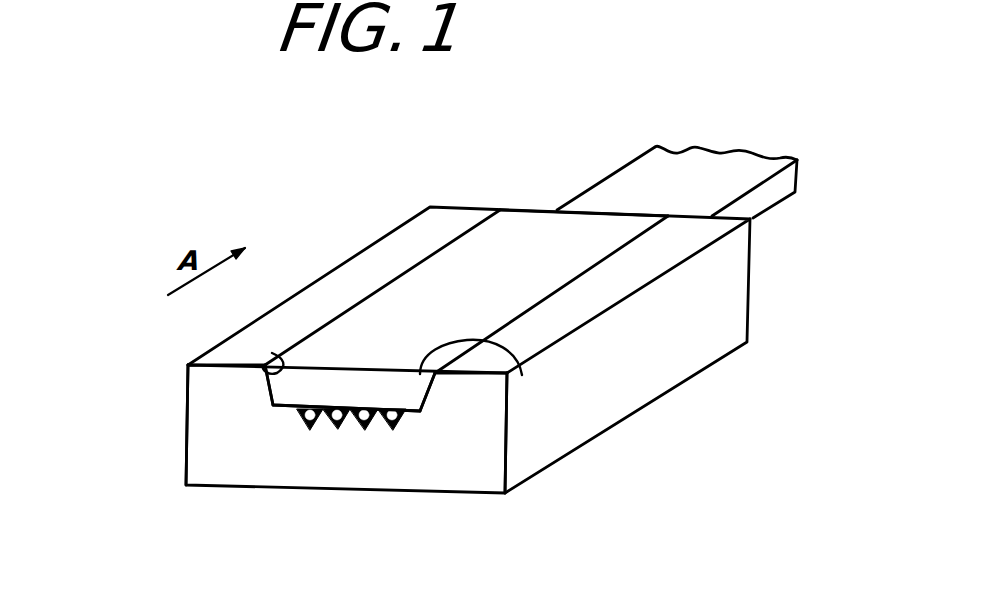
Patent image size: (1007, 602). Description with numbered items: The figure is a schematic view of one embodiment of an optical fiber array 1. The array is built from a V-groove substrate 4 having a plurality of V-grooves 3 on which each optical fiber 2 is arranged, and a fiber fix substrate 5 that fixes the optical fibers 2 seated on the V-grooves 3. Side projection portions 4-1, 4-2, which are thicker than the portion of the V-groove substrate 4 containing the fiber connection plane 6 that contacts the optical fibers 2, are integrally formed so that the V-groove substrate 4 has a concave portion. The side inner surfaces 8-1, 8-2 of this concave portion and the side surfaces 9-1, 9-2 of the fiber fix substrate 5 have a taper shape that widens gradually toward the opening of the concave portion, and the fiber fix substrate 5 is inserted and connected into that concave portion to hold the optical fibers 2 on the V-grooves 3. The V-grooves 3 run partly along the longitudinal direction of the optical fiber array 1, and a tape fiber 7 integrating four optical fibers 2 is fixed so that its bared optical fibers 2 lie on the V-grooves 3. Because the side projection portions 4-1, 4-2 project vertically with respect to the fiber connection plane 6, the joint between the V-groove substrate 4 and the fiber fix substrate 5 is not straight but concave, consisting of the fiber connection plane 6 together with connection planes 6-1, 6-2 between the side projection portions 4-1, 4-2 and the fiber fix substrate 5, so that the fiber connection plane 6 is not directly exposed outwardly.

The optical fiber array 1 is at (753, 300).
The optical fiber 2 is at (310, 430).
The V-groove 3 is at (338, 432).
The V-groove substrate 4 is at (395, 482).
The side projection portion 4-1 is at (200, 390).
The side projection portion 4-2 is at (478, 395).
The fiber fix substrate 5 is at (417, 280).
The fiber connection plane 6 is at (415, 410).
The connection plane 6-1 is at (272, 380).
The connection plane 6-2 is at (433, 385).
The tape fiber 7 is at (615, 180).
The side inner surface 8-1 is at (272, 353).
The side inner surface 8-2 is at (522, 375).
The side surface 9-1 is at (270, 398).
The side surface 9-2 is at (424, 410).